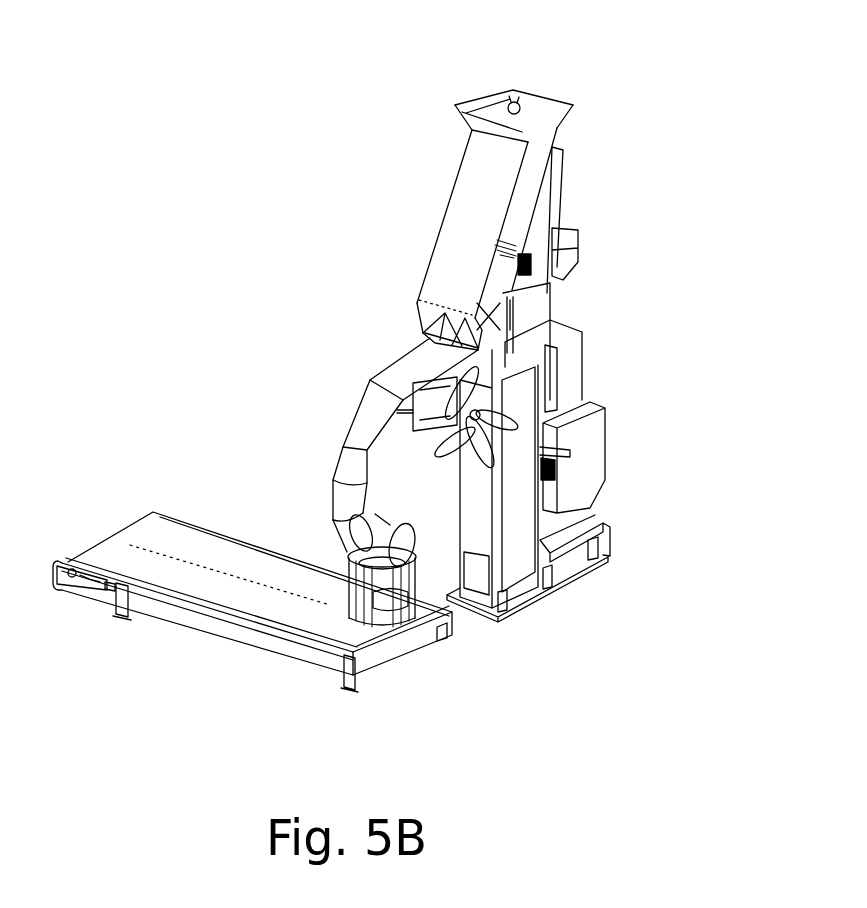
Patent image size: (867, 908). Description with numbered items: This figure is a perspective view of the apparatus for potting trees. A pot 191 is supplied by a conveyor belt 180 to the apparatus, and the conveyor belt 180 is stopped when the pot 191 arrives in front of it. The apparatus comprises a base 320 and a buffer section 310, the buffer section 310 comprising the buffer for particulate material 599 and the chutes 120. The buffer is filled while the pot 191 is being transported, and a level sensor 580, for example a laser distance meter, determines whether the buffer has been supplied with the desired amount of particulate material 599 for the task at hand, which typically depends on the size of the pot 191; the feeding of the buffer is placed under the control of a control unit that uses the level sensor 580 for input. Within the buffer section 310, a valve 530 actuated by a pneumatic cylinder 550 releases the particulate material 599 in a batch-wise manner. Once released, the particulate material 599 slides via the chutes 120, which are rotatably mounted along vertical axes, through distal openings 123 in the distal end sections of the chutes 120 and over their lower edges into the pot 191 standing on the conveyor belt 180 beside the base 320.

The level sensor 580 is at (516, 106).
The particulate material 599 is at (500, 235).
The buffer section 310 is at (399, 247).
The pneumatic cylinder 550 is at (520, 280).
The valve 530 is at (477, 298).
The chute 120 is at (352, 458).
The distal opening 123 is at (360, 533).
The conveyor belt 180 is at (157, 543).
The pot 191 is at (385, 623).
The base 320 is at (577, 603).